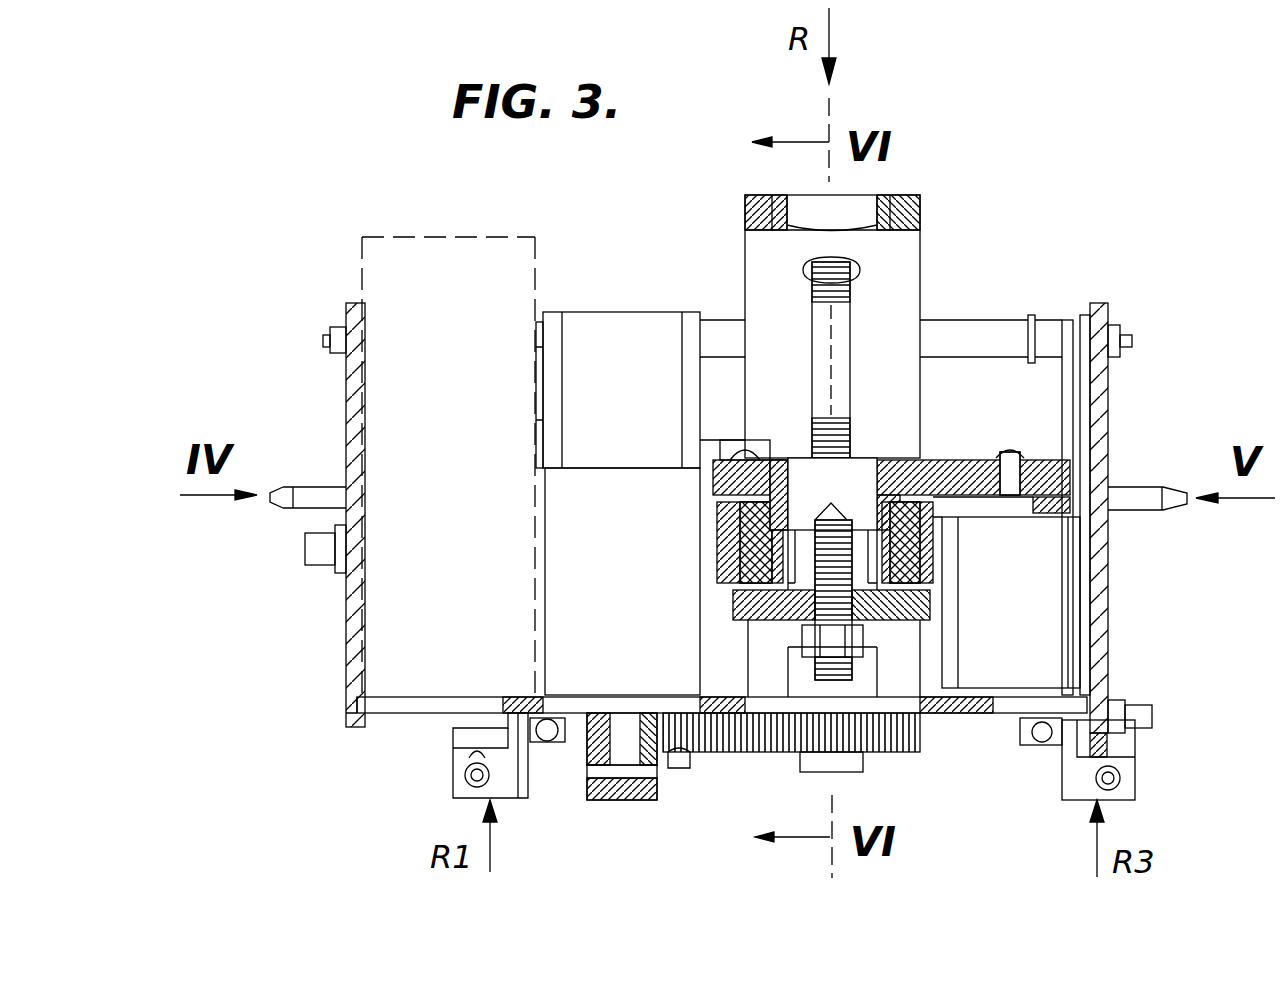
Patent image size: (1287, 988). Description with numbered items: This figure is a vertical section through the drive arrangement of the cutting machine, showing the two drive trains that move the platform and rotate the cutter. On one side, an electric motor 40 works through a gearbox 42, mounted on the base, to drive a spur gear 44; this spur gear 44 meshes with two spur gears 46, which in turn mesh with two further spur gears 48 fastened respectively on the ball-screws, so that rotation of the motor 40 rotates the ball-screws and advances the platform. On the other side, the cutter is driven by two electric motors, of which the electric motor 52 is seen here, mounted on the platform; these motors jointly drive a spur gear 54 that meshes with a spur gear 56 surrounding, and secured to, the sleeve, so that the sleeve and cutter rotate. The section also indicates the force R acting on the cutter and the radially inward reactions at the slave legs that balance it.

The electric motor 40 is at (613, 326).
The gearbox 42 is at (645, 577).
The spur gear 44 is at (647, 797).
The spur gears 46 is at (708, 735).
The spur gears 48 is at (920, 735).
The electric motor 52 is at (1034, 579).
The spur gear 54 is at (1073, 463).
The spur gear 56 is at (938, 458).